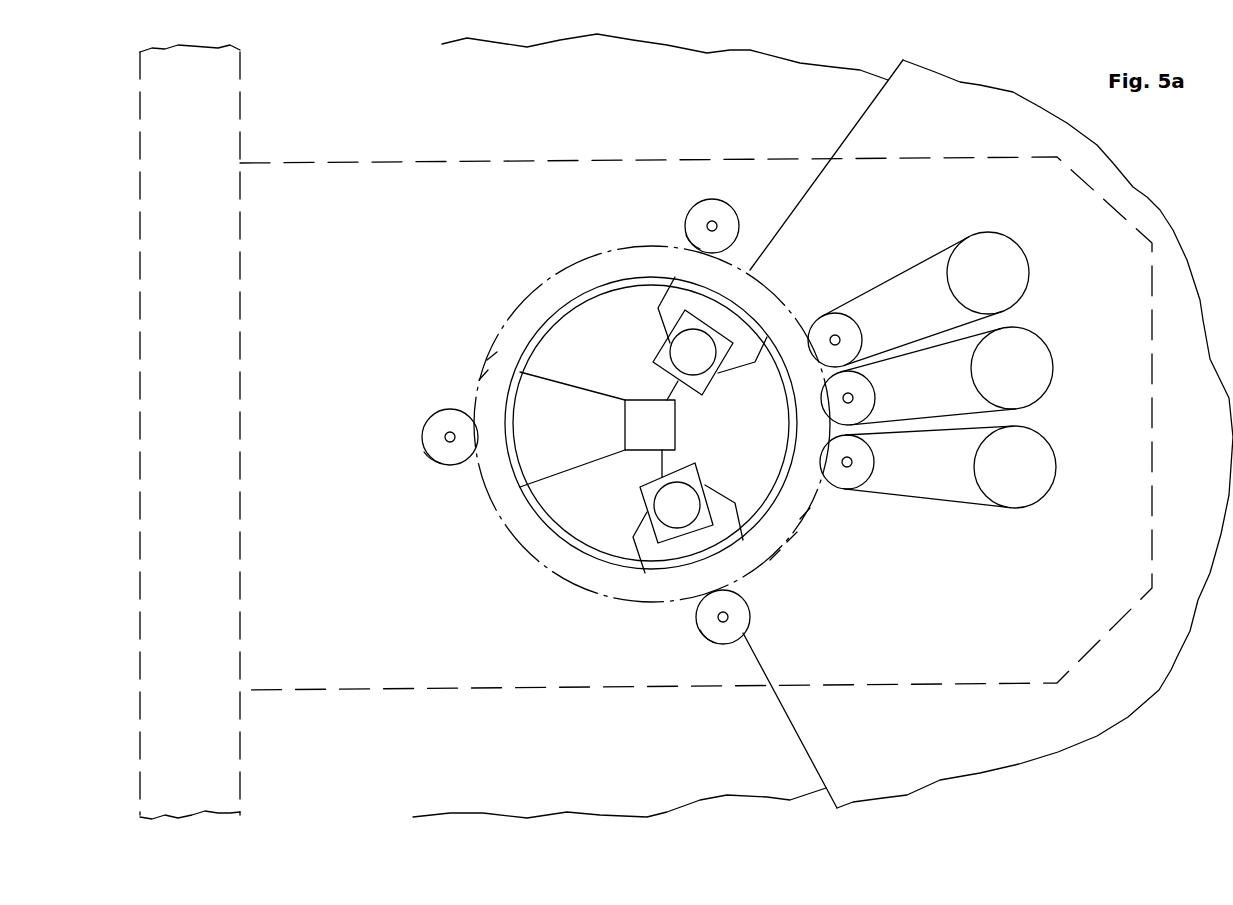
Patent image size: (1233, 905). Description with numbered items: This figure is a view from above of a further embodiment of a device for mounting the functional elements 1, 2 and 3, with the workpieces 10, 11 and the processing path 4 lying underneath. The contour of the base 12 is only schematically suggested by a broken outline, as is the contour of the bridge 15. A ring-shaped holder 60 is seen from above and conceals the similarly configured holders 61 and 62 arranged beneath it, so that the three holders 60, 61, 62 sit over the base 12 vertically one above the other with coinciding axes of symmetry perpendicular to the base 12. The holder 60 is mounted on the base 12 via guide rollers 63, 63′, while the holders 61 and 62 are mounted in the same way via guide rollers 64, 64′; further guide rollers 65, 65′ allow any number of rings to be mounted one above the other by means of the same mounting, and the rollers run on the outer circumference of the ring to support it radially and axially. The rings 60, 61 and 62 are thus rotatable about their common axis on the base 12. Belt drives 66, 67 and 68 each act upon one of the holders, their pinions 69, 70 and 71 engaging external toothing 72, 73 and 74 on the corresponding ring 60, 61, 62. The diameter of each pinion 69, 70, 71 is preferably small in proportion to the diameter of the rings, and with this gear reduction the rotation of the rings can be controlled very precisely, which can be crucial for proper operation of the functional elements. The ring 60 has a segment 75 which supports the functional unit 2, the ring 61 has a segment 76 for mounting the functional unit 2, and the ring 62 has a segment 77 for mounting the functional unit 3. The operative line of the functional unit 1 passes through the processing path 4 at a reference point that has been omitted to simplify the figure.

The functional element 1 is at (658, 423).
The functional element 2 is at (683, 348).
The functional element 3 is at (665, 505).
The processing path 4 is at (868, 108).
The workpiece 10 is at (918, 100).
The workpiece 11 is at (805, 83).
The base 12 is at (308, 175).
The bridge 15 is at (227, 70).
The ring-shaped holder 60 is at (509, 325).
The holder 61 is at (492, 357).
The holder 62 is at (483, 375).
The guide roller 63 is at (432, 427).
The guide roller 64 is at (422, 437).
The guide roller 65 is at (430, 453).
The guide roller 63′ is at (702, 615).
The guide roller 64′ is at (702, 632).
The wheel bracket 65′ is at (718, 642).
The belt drive 66 is at (1008, 262).
The belt drive 67 is at (1030, 357).
The belt drive 68 is at (1030, 447).
The pinion 69 is at (840, 322).
The pinion 70 is at (857, 388).
The pinion 71 is at (858, 455).
The external toothing 72 is at (805, 513).
The external toothing 73 is at (792, 537).
The external toothing 74 is at (775, 555).
The segment 75 is at (743, 353).
The segment 76 is at (570, 400).
The segment 77 is at (725, 522).